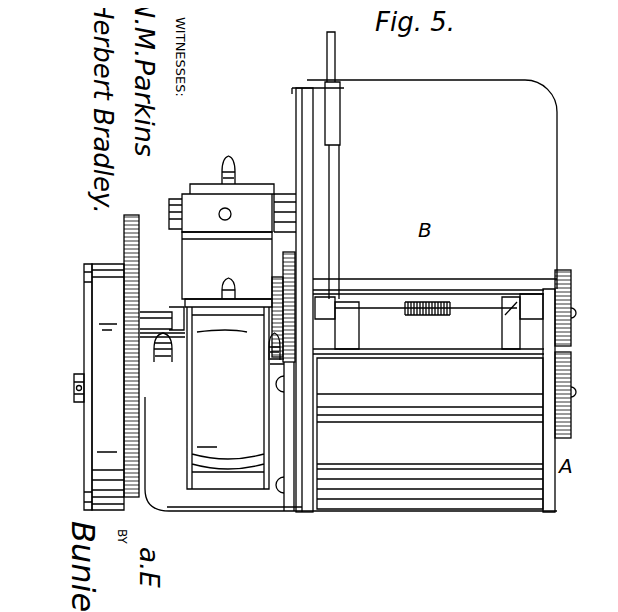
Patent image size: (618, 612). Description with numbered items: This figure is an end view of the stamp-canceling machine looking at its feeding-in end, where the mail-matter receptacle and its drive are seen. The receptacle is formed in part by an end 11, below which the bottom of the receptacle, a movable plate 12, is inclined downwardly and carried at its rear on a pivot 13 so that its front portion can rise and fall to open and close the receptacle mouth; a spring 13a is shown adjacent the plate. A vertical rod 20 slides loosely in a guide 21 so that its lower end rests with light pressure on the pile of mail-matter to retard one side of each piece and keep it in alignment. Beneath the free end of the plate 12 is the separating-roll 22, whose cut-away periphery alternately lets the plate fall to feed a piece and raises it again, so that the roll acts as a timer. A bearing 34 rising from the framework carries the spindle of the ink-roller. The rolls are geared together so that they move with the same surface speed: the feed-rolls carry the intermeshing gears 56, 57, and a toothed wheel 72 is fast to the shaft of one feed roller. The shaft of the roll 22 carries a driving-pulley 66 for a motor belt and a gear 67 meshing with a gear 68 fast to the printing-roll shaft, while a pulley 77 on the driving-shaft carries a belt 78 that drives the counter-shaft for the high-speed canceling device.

The receptacle end 11 is at (555, 173).
The movable plate 12 is at (455, 289).
The pivot 13 is at (503, 312).
The spring 13a is at (428, 318).
The vertical rod 20 is at (347, 178).
The guide 21 is at (352, 90).
The separating-roll 22 is at (430, 433).
The bearing 34 is at (221, 194).
The gear 56 is at (578, 278).
The gear 57 is at (578, 366).
The driving-pulley 66 is at (228, 394).
The gear 67 is at (141, 377).
The gear 68 is at (122, 226).
The toothed wheel 72 is at (281, 257).
The pulley 77 is at (88, 357).
The belt 78 is at (102, 318).